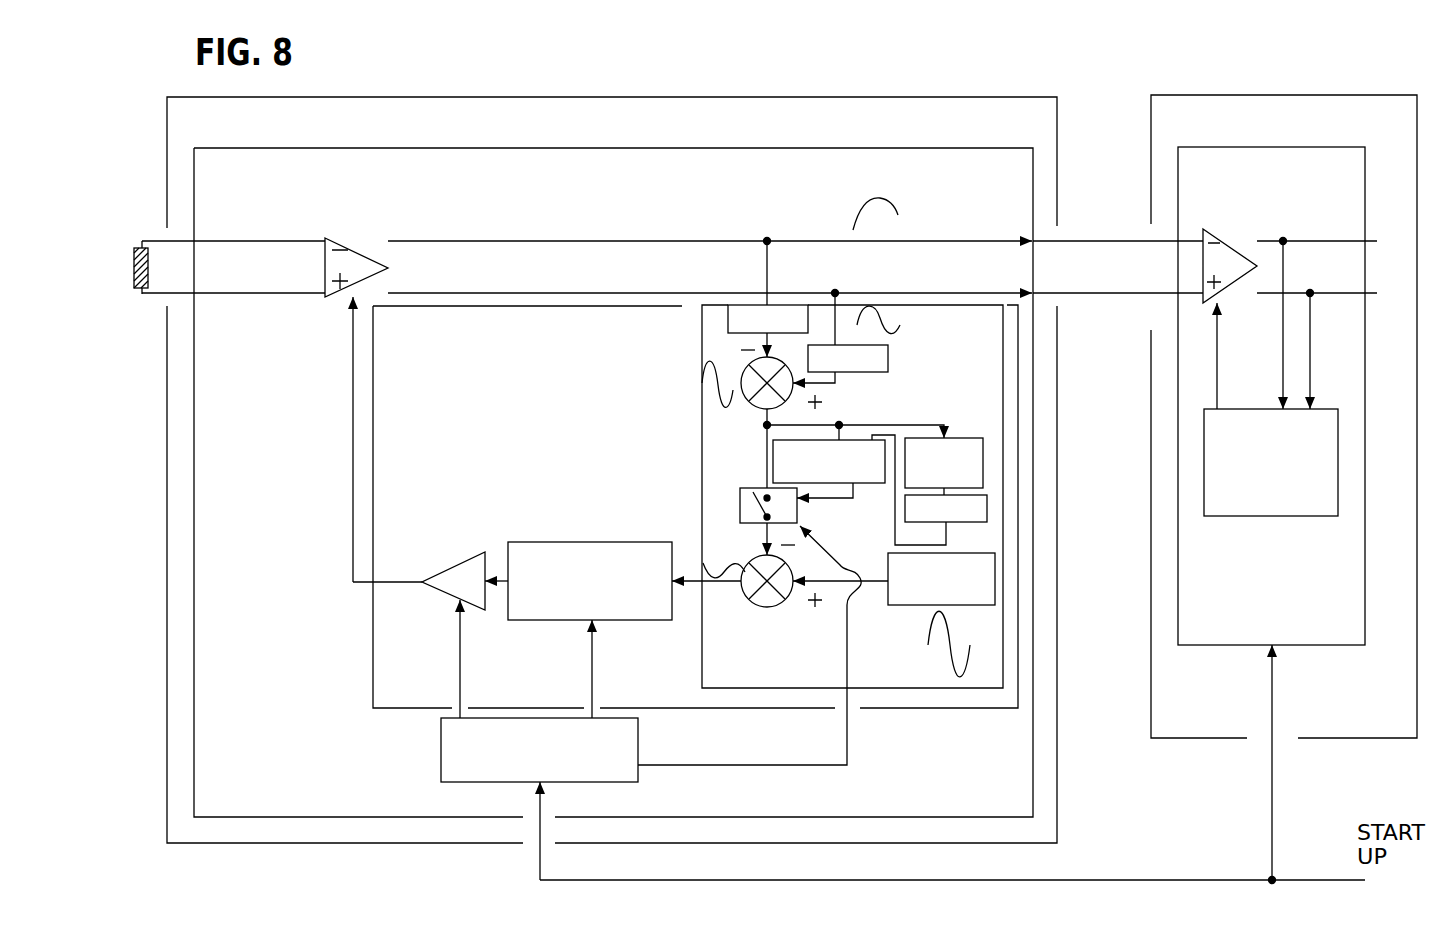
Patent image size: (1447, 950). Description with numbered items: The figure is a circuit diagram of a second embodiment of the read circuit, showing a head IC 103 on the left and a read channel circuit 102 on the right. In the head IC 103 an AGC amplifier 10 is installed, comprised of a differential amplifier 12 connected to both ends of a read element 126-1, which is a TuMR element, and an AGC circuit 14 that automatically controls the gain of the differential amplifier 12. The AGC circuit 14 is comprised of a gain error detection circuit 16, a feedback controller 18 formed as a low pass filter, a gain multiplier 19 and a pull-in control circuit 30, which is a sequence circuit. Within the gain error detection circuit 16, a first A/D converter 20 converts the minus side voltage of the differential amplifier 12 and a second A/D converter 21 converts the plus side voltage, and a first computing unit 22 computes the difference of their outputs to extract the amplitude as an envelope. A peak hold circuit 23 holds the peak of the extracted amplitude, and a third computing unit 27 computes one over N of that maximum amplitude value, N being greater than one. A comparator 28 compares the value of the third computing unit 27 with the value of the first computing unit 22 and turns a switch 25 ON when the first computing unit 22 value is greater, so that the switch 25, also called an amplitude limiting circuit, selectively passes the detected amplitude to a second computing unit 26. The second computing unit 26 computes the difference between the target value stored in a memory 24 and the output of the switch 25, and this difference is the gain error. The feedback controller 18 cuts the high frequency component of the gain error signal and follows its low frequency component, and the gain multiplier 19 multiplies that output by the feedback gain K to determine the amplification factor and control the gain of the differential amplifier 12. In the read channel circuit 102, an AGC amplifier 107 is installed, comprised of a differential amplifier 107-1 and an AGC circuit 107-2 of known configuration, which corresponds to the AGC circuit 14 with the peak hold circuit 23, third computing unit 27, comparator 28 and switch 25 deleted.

The AGC amplifier 10 is at (807, 162).
The differential amplifier 12 is at (333, 242).
The AGC circuit 14 is at (398, 648).
The gain error detection circuit 16 is at (703, 655).
The feedback controller 18 is at (550, 550).
The gain multiplier 19 is at (462, 570).
The first A/D converter 20 is at (728, 318).
The second A/D converter 21 is at (877, 358).
The first computing unit 22 is at (758, 405).
The peak hold circuit 23 is at (977, 445).
The memory 24 is at (902, 605).
The switch 25 is at (740, 508).
The second computing unit 26 is at (765, 597).
The third computing unit 27 is at (973, 520).
The comparator 28 is at (875, 483).
The pull-in control circuit 30 is at (441, 757).
The read channel circuit 102 is at (1242, 103).
The head IC 103 is at (714, 113).
The AGC amplifier 107 is at (1257, 150).
The differential amplifier 107-1 is at (1213, 238).
The AGC circuit 107-2 is at (1257, 516).
The read element 126-1 is at (133, 288).